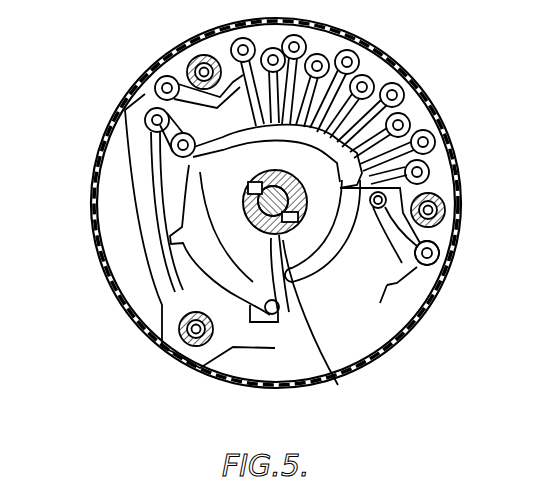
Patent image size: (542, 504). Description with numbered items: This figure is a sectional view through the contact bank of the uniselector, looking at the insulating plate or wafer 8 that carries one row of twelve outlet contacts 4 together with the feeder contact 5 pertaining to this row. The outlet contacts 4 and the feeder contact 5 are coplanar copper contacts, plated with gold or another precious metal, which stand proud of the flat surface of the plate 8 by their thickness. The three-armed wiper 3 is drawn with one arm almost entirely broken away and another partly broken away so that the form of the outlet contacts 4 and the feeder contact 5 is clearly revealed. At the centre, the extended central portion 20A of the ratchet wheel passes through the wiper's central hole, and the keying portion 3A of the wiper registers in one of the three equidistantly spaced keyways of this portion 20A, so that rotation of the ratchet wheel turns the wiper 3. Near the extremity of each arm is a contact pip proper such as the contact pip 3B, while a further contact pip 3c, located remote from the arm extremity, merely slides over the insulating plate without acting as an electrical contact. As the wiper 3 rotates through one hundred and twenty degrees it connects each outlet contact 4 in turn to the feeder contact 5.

The wiper 3 is at (350, 281).
The keying portion 3A is at (340, 387).
The contact pip 3B is at (440, 300).
The contact pip 3c is at (223, 313).
The outlet contacts 4 is at (228, 107).
The feeder contact 5 is at (190, 277).
The insulating plate or wafer 8 is at (140, 188).
The extended central portion 20A is at (252, 177).